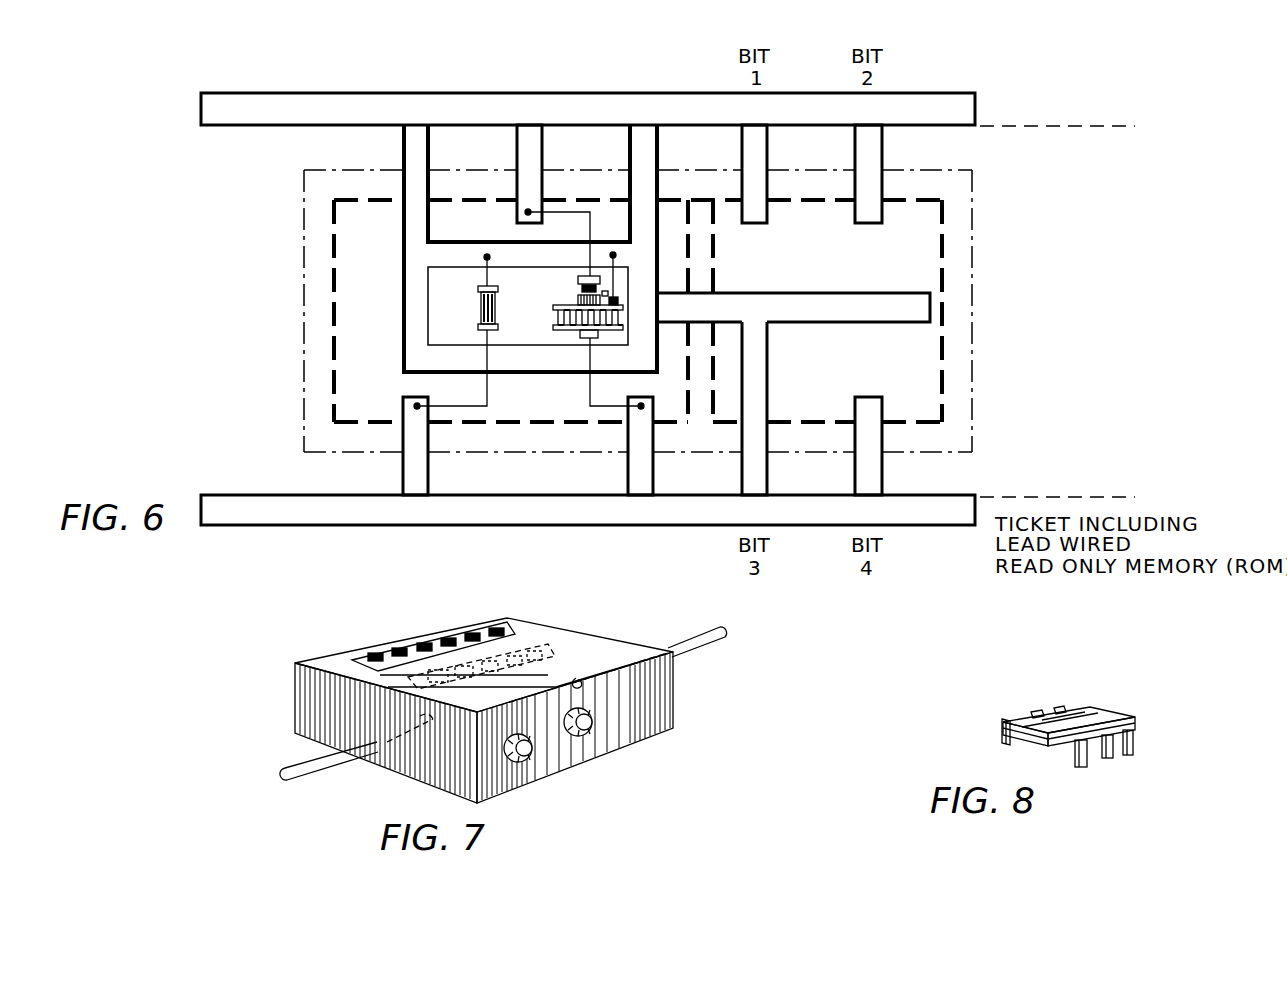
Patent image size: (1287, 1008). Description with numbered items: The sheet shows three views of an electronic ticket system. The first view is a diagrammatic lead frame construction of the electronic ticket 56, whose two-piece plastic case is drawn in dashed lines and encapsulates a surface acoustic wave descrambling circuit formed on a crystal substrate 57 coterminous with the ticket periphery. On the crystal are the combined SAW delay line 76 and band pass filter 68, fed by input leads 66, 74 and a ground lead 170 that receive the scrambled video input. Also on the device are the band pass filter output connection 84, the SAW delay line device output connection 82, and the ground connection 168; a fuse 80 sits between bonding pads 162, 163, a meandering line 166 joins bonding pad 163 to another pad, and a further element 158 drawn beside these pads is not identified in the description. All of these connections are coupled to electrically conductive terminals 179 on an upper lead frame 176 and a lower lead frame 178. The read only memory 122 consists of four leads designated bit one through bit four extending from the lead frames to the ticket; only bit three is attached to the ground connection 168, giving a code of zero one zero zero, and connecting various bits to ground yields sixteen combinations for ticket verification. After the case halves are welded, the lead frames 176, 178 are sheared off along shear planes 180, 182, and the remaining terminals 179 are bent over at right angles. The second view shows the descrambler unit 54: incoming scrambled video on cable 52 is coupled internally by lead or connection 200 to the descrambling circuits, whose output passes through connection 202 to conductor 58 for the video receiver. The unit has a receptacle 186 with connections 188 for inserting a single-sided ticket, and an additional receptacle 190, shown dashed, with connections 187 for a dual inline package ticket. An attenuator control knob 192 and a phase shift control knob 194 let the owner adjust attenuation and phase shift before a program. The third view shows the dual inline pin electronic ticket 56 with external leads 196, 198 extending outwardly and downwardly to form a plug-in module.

In FIG. 6, the lead frame 176 is at (231, 120).
In FIG. 6, the lead frame 178 is at (216, 494).
In FIG. 6, the electrically conductive terminals 179 is at (517, 147).
In FIG. 6, the shear plane 180 is at (1005, 125).
In FIG. 6, the shear plane 182 is at (1005, 495).
In FIG. 6, the electronic ticket 56 is at (578, 311).
In FIG. 8, the electronic ticket 56 is at (1074, 738).
In FIG. 6, the crystal substrate 57 is at (304, 250).
In FIG. 6, the read only memory (ROM) 122 is at (620, 311).
In FIG. 6, the band pass filter 68 is at (566, 311).
In FIG. 6, the SAW delay line 76 is at (334, 321).
In FIG. 6, the lead 66 is at (412, 369).
In FIG. 6, the lead 74 is at (447, 402).
In FIG. 6, the SAW delay line device output connection 82 is at (588, 226).
In FIG. 6, the band pass filter output connection 84 is at (588, 390).
In FIG. 6, the ground lead 170 is at (486, 280).
In FIG. 6, the memory chip assembly 158 is at (635, 269).
In FIG. 6, the bonding pad 162 is at (578, 282).
In FIG. 6, the fuse 80 is at (576, 296).
In FIG. 6, the bonding pad 163 is at (553, 313).
In FIG. 6, the meandering line 166 is at (606, 292).
In FIG. 6, the ground connection 168 is at (618, 279).
In FIG. 7, the descrambler unit 54 is at (292, 681).
In FIG. 7, the cable 52 is at (298, 764).
In FIG. 7, the conductor 58 is at (707, 645).
In FIG. 7, the receptacle 186 is at (406, 622).
In FIG. 7, the connections 188 is at (404, 650).
In FIG. 7, the connections 187 is at (526, 635).
In FIG. 7, the additional receptacle 190 is at (557, 646).
In FIG. 7, the connection 202 is at (548, 678).
In FIG. 7, the lead or connection 200 is at (415, 735).
In FIG. 7, the attenuator control knob 192 is at (538, 750).
In FIG. 7, the phase shift control knob 194 is at (600, 725).
In FIG. 8, the external leads 196 is at (1057, 708).
In FIG. 8, the external leads 198 is at (1128, 755).